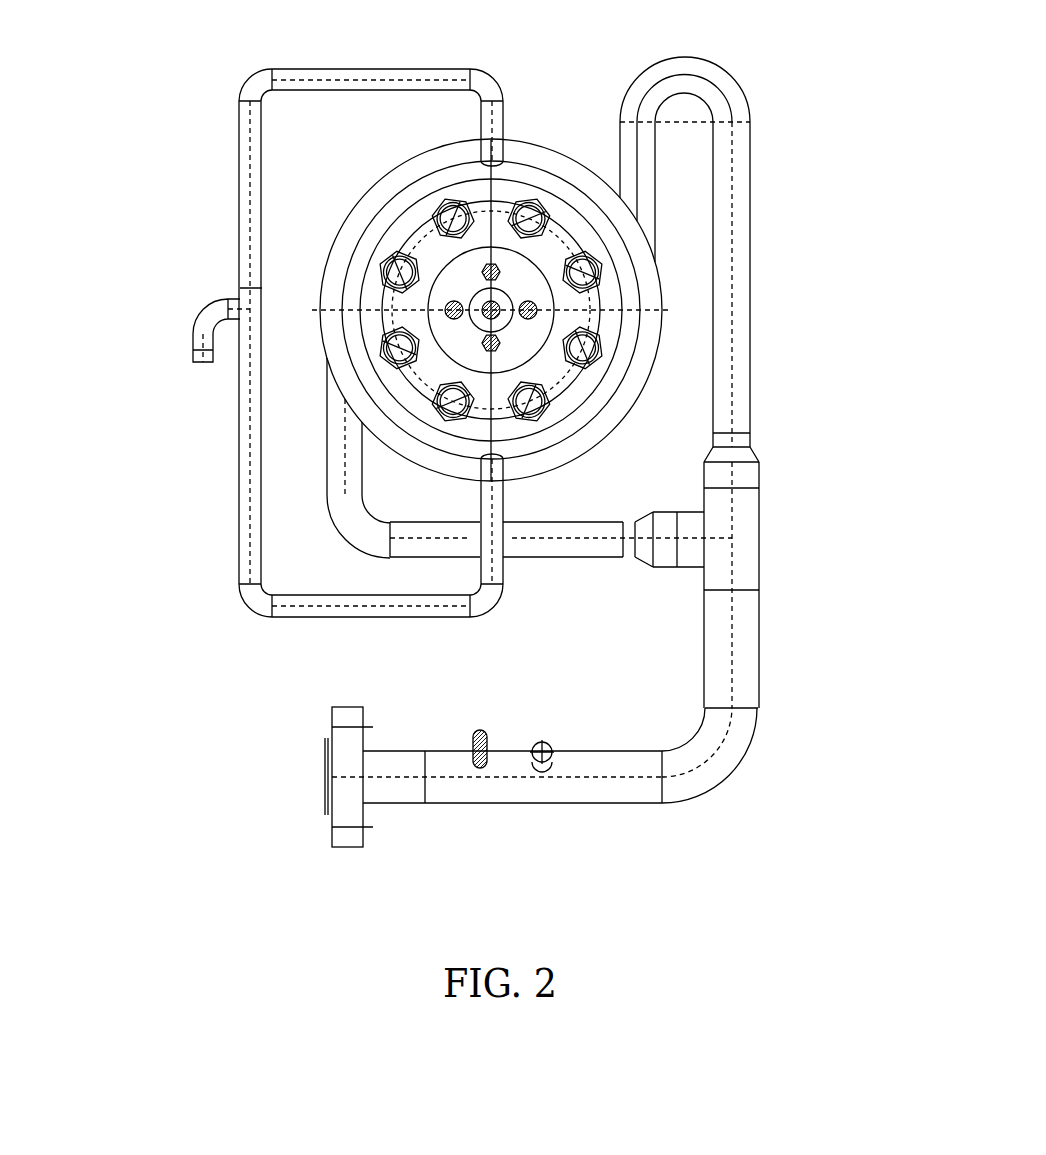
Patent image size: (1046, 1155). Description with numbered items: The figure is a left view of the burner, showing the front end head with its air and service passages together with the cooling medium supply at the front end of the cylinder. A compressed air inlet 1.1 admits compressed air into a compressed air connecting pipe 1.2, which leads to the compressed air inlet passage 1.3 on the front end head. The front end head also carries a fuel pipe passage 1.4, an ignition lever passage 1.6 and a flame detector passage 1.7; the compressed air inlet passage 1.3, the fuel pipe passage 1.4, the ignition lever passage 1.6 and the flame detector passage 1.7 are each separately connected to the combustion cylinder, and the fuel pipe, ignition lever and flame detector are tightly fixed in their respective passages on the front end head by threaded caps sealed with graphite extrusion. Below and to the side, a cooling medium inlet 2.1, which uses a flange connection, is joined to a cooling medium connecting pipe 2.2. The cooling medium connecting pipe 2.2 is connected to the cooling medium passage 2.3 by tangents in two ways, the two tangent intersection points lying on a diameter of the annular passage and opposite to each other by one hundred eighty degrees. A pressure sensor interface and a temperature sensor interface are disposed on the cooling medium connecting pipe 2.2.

The compressed air inlet 1.1 is at (211, 330).
The compressed air connecting pipe 1.2 is at (335, 613).
The compressed air inlet passage 1.3 is at (475, 442).
The fuel pipe passage 1.4 is at (489, 307).
The ignition lever passage 1.6 is at (491, 343).
The flame detector passage 1.7 is at (491, 265).
The cooling medium inlet 2.1 is at (337, 796).
The cooling medium connecting pipe 2.2 is at (735, 640).
The cooling medium passage 2.3 is at (648, 270).